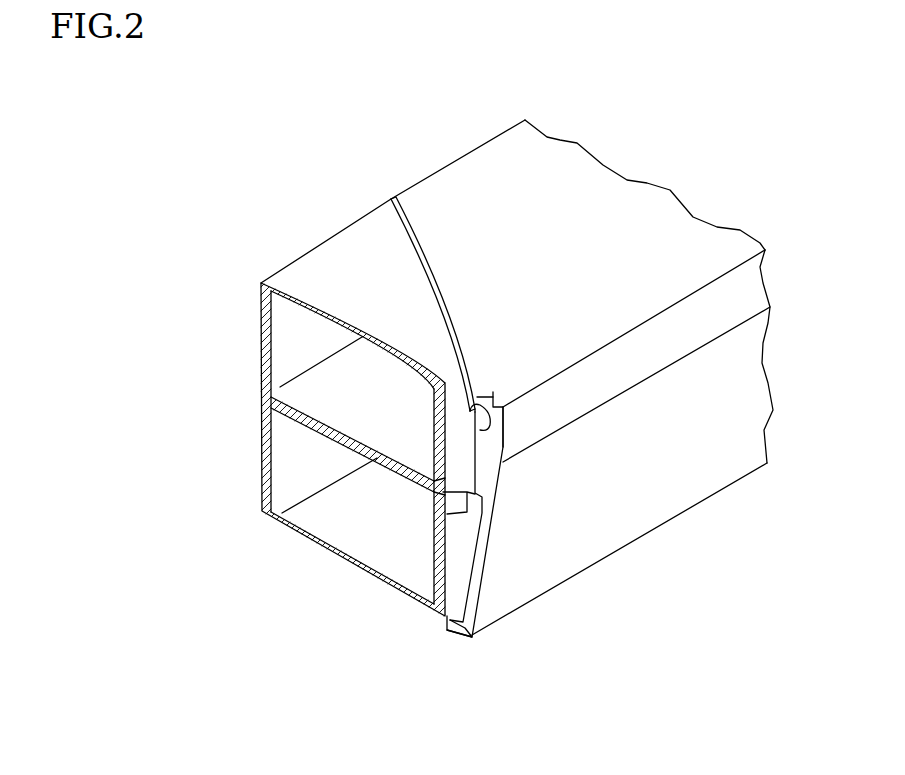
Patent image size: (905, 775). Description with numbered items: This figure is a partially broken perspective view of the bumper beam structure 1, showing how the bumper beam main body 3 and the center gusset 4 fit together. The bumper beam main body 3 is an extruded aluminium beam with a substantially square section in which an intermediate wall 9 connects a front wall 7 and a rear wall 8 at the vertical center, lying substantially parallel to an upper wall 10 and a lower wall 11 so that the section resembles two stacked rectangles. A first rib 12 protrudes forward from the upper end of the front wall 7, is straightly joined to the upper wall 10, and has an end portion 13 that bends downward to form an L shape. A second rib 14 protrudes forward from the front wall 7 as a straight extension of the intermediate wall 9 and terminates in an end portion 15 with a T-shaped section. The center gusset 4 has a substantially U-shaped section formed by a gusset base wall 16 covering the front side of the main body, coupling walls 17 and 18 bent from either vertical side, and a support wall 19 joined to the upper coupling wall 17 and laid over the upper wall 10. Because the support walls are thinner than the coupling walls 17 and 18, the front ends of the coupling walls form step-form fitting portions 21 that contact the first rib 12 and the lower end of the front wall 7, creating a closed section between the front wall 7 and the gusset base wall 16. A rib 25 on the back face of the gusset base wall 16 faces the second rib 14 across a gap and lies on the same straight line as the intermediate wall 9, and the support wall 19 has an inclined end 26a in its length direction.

The bumper beam structure 1 is at (740, 206).
The bumper beam main body 3 is at (283, 260).
The center gusset 4 is at (707, 510).
The front wall 7 is at (457, 580).
The rear wall 8 is at (262, 460).
The intermediate wall 9 is at (313, 397).
The upper wall 10 is at (298, 310).
The lower wall 11 is at (332, 530).
The first rib 12 is at (473, 407).
The end portion 13 is at (505, 452).
The second rib 14 is at (432, 492).
The end portion 15 is at (440, 495).
The gusset base wall 16 is at (730, 388).
The coupling wall 17 is at (483, 410).
The coupling wall 18 is at (450, 635).
The support wall 19 is at (597, 190).
The fitting portion 21 is at (470, 407).
The rib 25 is at (483, 507).
The end 26a is at (400, 235).